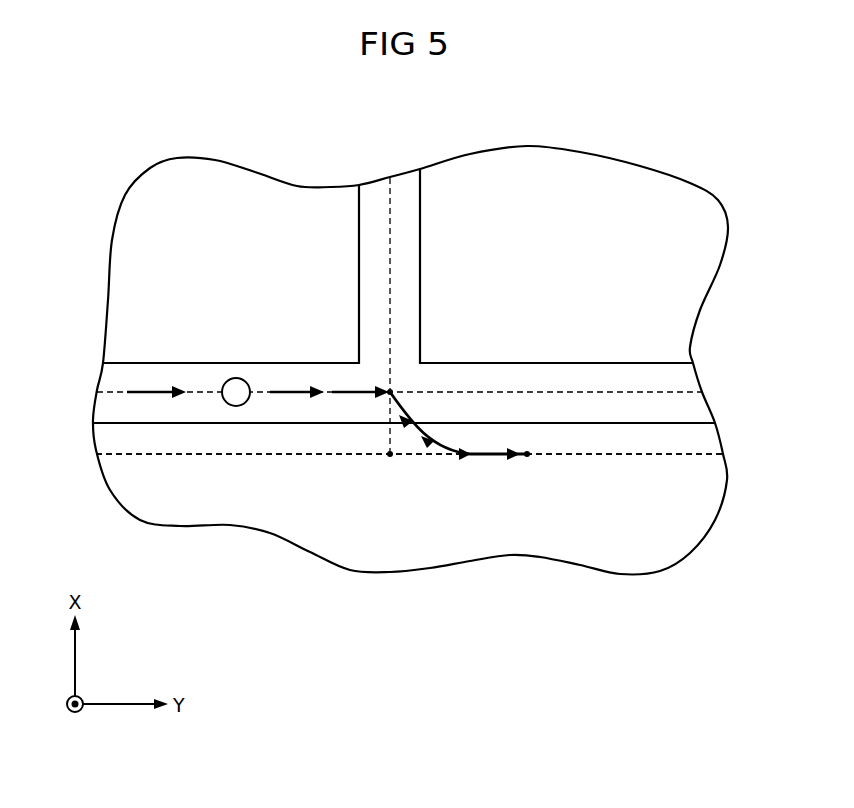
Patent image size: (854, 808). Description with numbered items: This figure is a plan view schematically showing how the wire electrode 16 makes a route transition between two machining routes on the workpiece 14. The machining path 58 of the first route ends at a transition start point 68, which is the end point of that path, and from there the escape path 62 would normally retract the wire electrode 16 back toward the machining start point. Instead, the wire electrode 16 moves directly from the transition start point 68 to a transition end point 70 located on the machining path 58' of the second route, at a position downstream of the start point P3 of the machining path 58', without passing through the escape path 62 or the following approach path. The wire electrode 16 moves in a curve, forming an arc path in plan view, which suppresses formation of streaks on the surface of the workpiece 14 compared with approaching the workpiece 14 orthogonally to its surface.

The workpiece 14 is at (613, 557).
The wire electrode 16 is at (238, 378).
The machining path 58 is at (408, 311).
The machining path 58' is at (409, 482).
The escape path 62 is at (390, 249).
The transition start point 68 is at (392, 390).
The transition end point 70 is at (528, 456).
The start point P3 is at (389, 456).